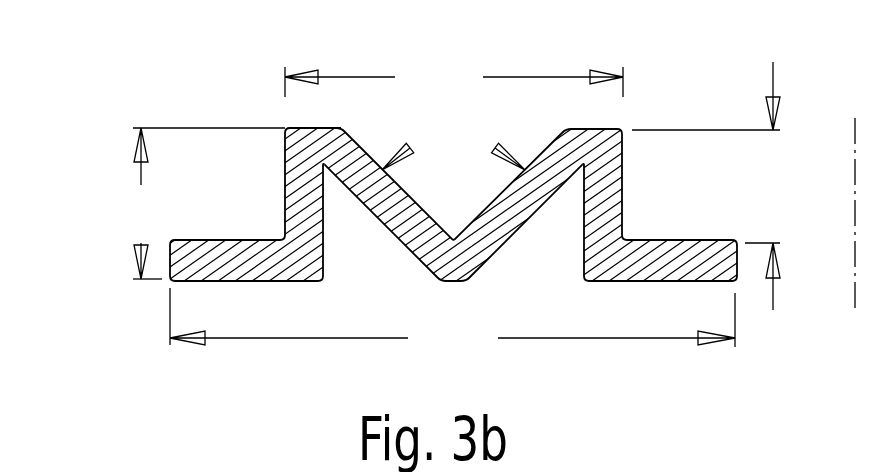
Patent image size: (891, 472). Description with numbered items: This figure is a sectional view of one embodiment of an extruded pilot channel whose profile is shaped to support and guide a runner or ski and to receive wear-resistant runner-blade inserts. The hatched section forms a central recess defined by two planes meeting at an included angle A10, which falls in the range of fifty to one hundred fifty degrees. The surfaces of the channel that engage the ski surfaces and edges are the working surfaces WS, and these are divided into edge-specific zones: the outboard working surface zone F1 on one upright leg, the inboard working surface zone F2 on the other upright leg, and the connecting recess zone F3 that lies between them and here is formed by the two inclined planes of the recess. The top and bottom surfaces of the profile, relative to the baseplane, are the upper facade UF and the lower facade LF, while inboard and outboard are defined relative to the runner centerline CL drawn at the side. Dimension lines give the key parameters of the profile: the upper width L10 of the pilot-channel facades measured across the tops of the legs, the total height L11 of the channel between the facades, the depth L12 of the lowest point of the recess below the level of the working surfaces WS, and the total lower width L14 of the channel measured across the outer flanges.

The working surface WS is at (361, 133).
The outboard working surface zone F1 is at (303, 125).
The inboard working surface zone F2 is at (593, 129).
The connecting recess zone F3 is at (543, 133).
The recess included angle A10 is at (453, 141).
The upper width of pilot-channel facades L10 is at (454, 79).
The total height of pilot channel between facades L11 is at (138, 203).
The depth of pilot channel below working surface L12 is at (771, 186).
The total lower width of pilot channel L14 is at (452, 328).
The upper facade UF is at (419, 111).
The lower facade LF is at (110, 263).
The centerline CL is at (862, 247).